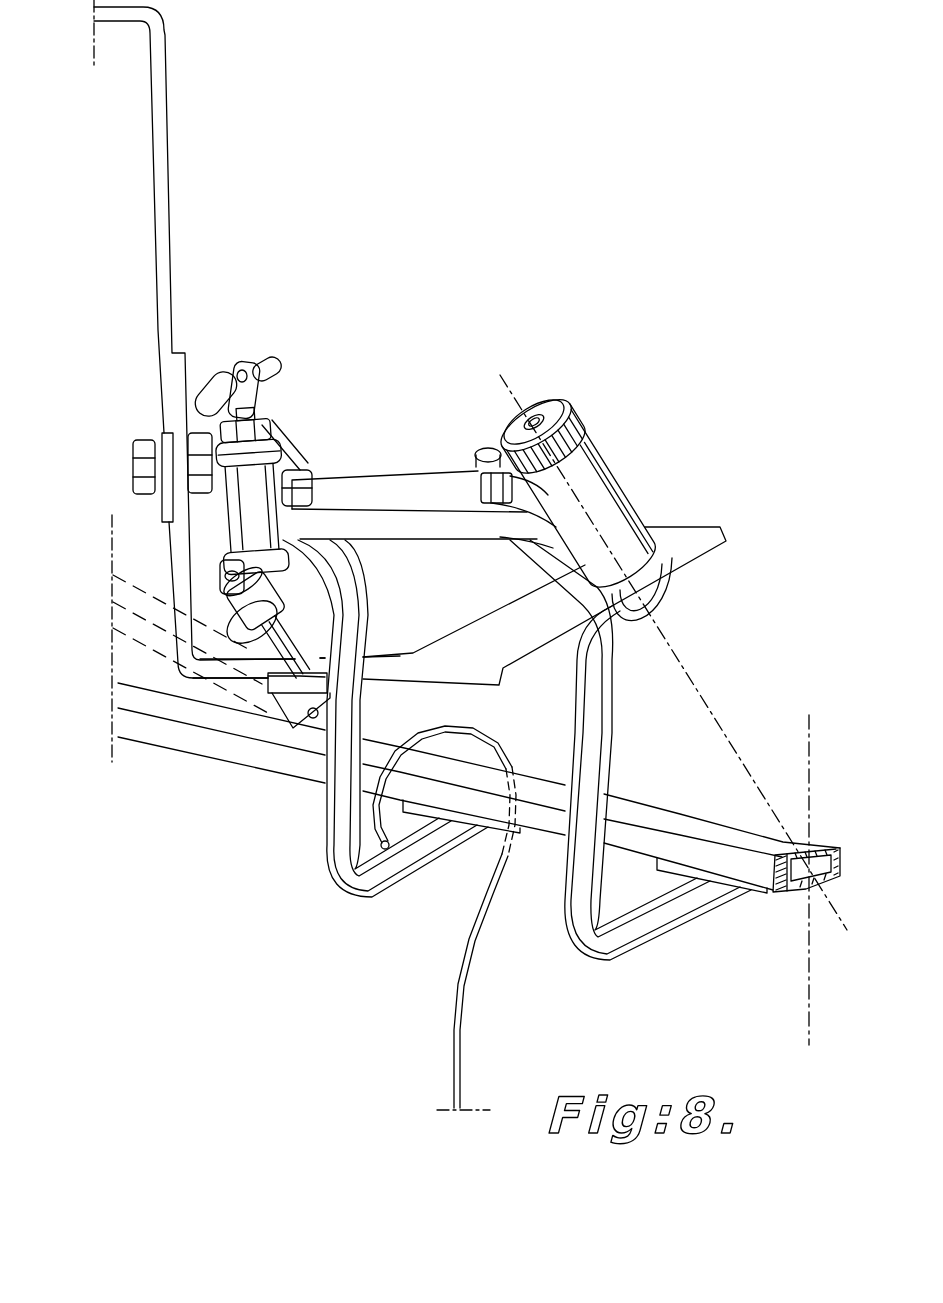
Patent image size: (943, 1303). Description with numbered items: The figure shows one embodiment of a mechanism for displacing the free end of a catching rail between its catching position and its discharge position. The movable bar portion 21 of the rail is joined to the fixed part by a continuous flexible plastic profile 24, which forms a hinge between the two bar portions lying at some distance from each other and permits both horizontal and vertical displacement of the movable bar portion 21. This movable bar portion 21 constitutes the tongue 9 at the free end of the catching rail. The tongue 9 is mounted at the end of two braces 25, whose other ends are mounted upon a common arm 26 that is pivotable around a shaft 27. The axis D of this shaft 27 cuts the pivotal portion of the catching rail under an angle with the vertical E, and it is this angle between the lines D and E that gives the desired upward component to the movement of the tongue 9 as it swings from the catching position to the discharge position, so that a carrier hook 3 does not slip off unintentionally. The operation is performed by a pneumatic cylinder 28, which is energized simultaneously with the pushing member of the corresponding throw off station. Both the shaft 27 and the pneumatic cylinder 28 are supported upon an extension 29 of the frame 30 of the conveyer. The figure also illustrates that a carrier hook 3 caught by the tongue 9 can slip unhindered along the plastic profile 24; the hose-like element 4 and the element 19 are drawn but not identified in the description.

The frame 30 is at (160, 132).
The pneumatic cylinder 28 is at (253, 477).
The common arm 26 is at (369, 488).
The shaft 27 is at (606, 479).
The hanger strap 19 is at (367, 630).
The extension 29 is at (464, 645).
The hose loop 4 is at (501, 758).
The flexible plastic profile 24 is at (661, 816).
The tongue 9 is at (125, 742).
The braces 25 is at (354, 886).
The carrier hook 3 is at (466, 978).
The movable bar portion 21 is at (787, 892).
The axis of the shaft D is at (729, 736).
The vertical E is at (808, 963).